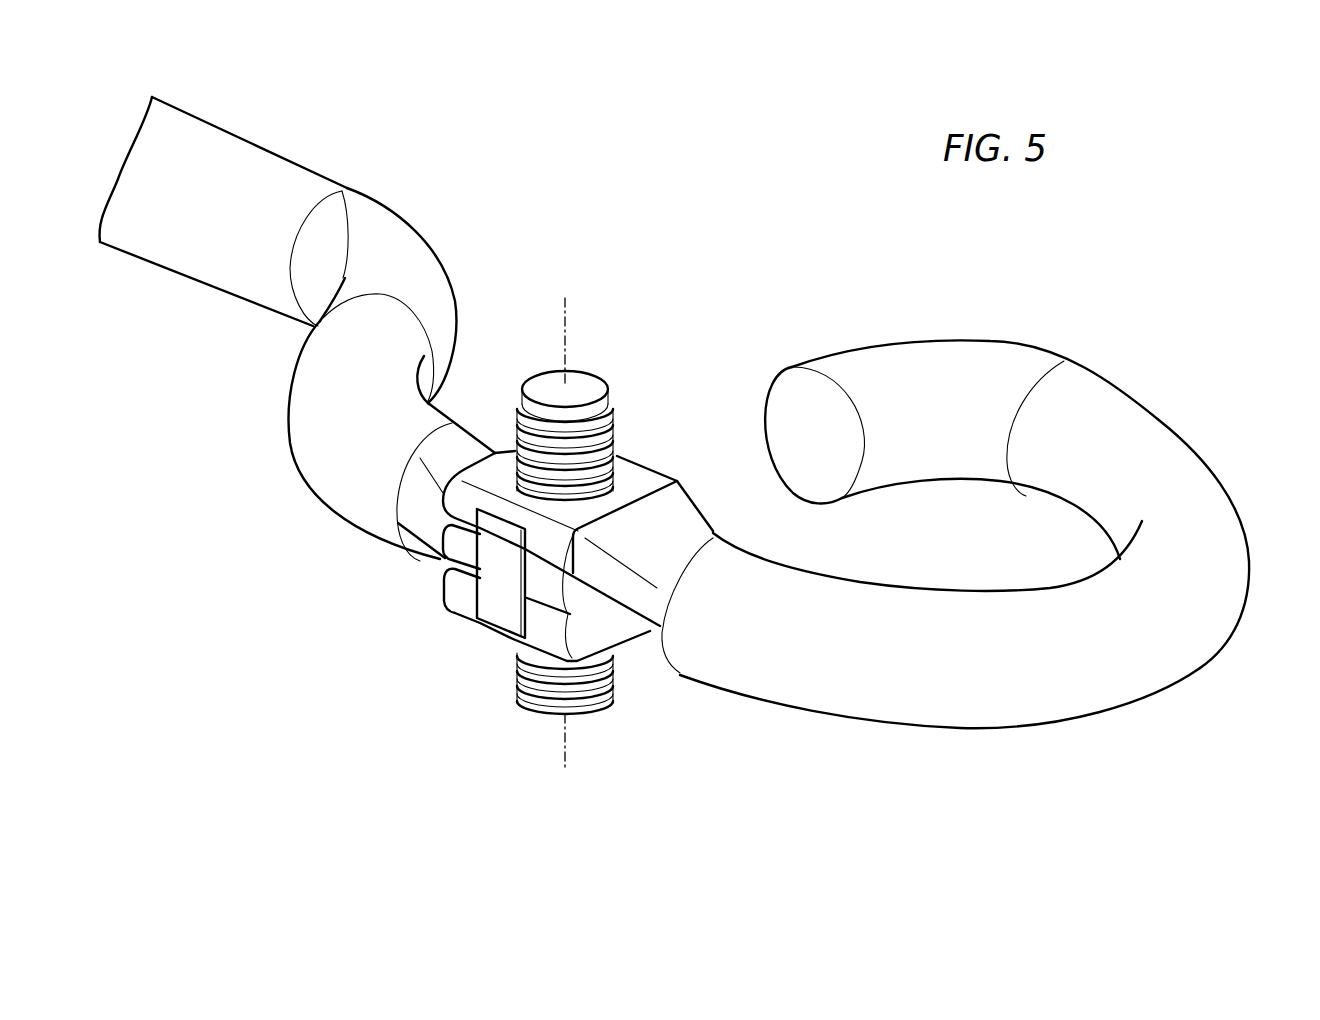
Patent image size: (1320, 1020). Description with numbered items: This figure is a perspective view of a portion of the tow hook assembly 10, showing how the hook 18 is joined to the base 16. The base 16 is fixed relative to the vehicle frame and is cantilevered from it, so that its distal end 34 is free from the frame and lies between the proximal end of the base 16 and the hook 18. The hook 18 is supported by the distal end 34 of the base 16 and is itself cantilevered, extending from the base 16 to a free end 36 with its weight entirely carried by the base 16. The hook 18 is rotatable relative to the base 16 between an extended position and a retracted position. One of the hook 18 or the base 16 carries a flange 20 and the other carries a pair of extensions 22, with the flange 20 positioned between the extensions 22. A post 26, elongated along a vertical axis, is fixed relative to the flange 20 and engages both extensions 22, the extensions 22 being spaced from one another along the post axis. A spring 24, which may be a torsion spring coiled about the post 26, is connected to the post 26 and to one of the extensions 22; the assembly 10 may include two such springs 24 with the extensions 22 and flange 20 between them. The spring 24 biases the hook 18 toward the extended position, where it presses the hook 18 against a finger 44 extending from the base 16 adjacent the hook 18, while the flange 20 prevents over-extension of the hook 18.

The assembly 10 is at (1170, 272).
The base 16 is at (266, 142).
The hook 18 is at (1131, 712).
The flange 20 is at (470, 547).
The extensions 22 is at (637, 478).
The spring 24 is at (610, 410).
The post 26 is at (593, 388).
The distal end 34 is at (400, 587).
The free end 36 is at (1232, 650).
The finger 44 is at (500, 583).